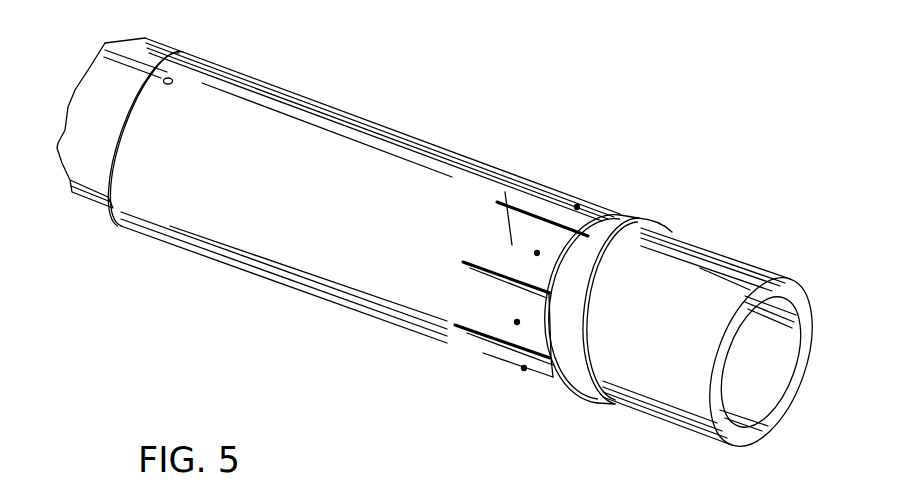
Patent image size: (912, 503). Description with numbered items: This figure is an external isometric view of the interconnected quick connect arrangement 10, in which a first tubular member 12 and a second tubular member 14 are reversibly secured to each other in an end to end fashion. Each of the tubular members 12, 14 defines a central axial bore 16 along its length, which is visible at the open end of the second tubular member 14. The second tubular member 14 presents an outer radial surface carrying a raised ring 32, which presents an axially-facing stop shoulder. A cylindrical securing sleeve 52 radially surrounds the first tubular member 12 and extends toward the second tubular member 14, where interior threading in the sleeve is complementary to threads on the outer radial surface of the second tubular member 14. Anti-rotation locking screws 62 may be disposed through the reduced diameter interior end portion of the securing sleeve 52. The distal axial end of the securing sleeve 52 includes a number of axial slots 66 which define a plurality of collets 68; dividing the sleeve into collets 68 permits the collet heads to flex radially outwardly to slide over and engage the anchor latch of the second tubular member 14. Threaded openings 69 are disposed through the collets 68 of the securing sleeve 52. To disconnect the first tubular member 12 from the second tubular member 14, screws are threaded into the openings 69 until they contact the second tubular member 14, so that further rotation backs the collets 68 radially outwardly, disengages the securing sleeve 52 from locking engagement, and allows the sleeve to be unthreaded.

The quick connect arrangement 10 is at (538, 71).
The first tubular member 12 is at (91, 200).
The second tubular member 14 is at (706, 257).
The central axial bore 16 is at (755, 394).
The raised ring 32 is at (638, 220).
The securing sleeve 52 is at (205, 264).
The anti-rotation locking screws 62 is at (172, 77).
The axial slots 66 is at (480, 270).
The collets 68 is at (512, 245).
The threaded openings 69 is at (539, 251).